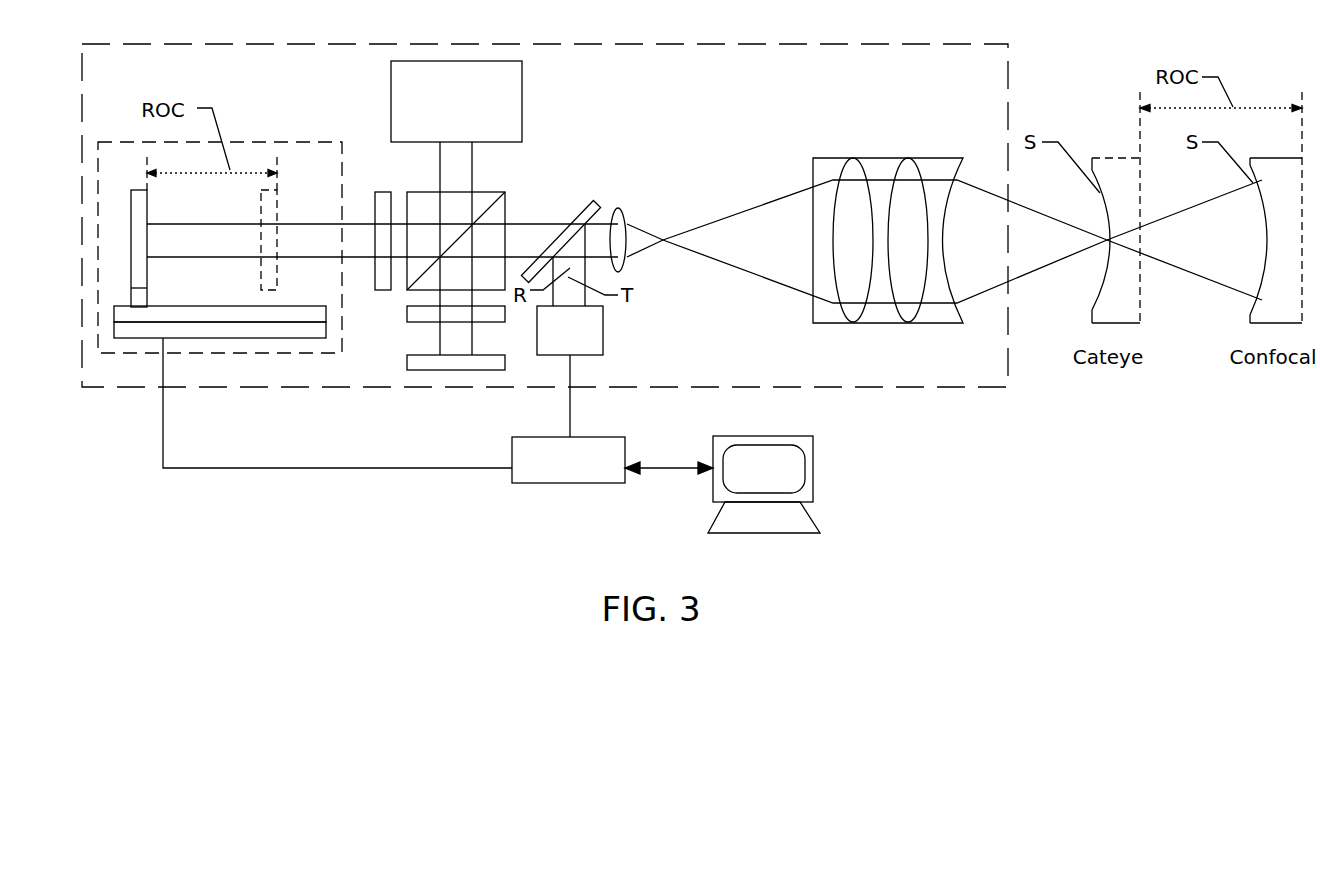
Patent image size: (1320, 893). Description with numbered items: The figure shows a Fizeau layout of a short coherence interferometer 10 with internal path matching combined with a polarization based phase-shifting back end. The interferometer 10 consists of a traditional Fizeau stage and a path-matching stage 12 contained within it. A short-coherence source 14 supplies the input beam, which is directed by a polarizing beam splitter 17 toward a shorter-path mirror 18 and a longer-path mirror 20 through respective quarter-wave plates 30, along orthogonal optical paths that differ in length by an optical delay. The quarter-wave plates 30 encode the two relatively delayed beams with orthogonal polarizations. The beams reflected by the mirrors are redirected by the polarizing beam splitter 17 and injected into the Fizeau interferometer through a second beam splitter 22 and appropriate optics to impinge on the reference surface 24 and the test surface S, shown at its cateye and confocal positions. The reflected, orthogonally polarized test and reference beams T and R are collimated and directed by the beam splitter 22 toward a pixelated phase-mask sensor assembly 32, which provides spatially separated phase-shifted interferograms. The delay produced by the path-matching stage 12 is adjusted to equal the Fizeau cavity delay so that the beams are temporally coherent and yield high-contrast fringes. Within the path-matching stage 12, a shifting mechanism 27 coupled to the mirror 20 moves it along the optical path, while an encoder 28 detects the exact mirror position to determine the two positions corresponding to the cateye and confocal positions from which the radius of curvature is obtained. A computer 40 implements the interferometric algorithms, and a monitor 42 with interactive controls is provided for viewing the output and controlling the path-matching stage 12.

The interferometer 10 is at (545, 193).
The path-matching stage 12 is at (222, 225).
The short-coherence source 14 is at (488, 101).
The polarizing beam splitter 17 is at (478, 218).
The shorter-path mirror 18 is at (439, 392).
The longer-path mirror 20 is at (233, 243).
The second beam splitter 22 is at (583, 223).
The reference surface 24 is at (907, 240).
The shifting mechanism 27 is at (220, 299).
The encoder 28 is at (220, 352).
The quarter-wave plates 30 is at (433, 247).
The pixelated phase-mask sensor assembly 32 is at (601, 336).
The computer 40 is at (548, 483).
The monitor 42 is at (790, 484).